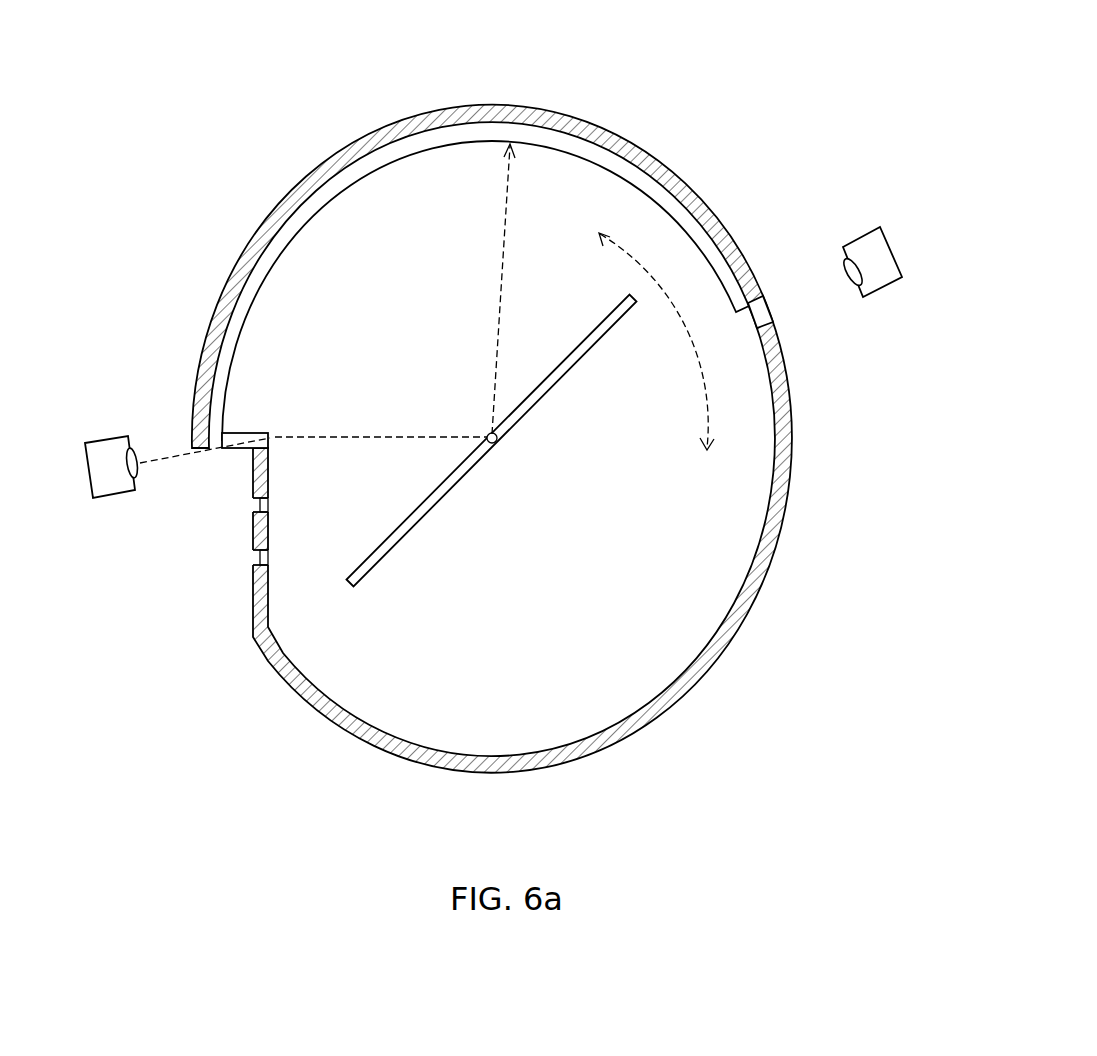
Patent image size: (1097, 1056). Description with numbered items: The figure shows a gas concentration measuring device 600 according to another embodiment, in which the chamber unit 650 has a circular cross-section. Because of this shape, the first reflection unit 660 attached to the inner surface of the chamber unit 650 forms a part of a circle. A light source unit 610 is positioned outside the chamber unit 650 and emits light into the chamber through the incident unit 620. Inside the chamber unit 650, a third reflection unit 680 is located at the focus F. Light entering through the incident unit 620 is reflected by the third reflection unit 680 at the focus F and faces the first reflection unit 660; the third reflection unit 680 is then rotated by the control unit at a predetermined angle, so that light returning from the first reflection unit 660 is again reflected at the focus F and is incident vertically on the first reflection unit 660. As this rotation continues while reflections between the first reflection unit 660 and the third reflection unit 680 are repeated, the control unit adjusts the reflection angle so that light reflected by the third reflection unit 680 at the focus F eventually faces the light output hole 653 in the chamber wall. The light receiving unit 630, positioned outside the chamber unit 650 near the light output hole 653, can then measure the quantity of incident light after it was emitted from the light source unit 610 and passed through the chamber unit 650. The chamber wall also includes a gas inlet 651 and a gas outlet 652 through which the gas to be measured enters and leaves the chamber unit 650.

The gas concentration measuring device 600 is at (960, 52).
The light source unit 610 is at (111, 498).
The incident unit 620 is at (236, 433).
The light receiving unit 630 is at (867, 228).
The chamber unit 650 is at (597, 126).
The gas inlet 651 is at (255, 505).
The gas outlet 652 is at (255, 557).
The light output hole 653 is at (758, 313).
The first reflection unit 660 is at (335, 188).
The third reflection unit 680 is at (437, 500).
The focus F is at (499, 446).